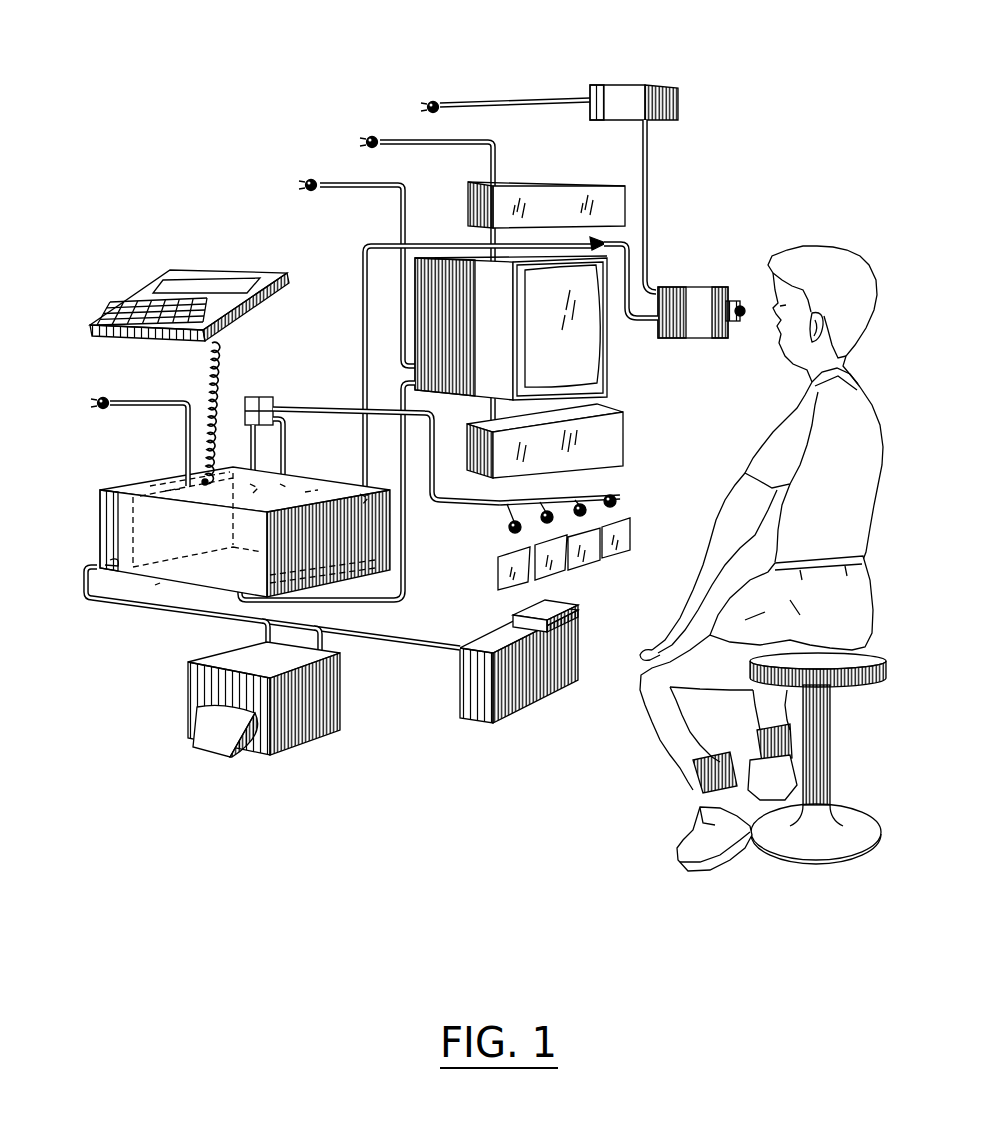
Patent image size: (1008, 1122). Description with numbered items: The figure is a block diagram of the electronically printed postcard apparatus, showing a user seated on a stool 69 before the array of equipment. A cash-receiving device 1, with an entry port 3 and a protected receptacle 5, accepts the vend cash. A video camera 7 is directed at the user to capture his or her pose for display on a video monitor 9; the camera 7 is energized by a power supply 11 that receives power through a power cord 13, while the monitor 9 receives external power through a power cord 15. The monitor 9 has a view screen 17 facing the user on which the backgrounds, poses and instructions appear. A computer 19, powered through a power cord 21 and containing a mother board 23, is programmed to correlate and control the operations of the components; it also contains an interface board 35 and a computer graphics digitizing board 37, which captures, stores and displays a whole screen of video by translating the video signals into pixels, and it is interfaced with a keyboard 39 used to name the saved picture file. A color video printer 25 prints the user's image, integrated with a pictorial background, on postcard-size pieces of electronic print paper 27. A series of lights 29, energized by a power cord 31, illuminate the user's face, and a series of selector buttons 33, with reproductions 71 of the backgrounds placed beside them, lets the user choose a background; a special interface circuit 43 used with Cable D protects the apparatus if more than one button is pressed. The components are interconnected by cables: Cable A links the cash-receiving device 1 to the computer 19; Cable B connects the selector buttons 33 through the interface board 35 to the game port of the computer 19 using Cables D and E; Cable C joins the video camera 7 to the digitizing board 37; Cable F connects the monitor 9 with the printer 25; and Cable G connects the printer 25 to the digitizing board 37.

The cash-receiving device 1 is at (539, 695).
The entry port 3 is at (578, 620).
The protected receptacle 5 is at (472, 705).
The video camera 7 is at (690, 287).
The video monitor 9 is at (554, 333).
The power supply 11 is at (622, 87).
The power cord 13 is at (497, 100).
The power cord 15 is at (333, 182).
The view screen 17 is at (582, 362).
The computer 19 is at (207, 530).
The power cord 21 is at (130, 402).
The mother board 23 is at (118, 558).
The color video printer 25 is at (225, 728).
The electronic print paper 27 is at (187, 737).
The lights 29 is at (553, 192).
The power cord 31 is at (397, 140).
The selector buttons 33 is at (612, 496).
The interface board 35 is at (165, 490).
The computer graphics digitizing board 37 is at (310, 490).
The keyboard 39 is at (178, 360).
The special interface circuit 43 is at (155, 585).
The stool 69 is at (873, 688).
The reproductions 71 is at (587, 563).
The Cable A is at (400, 640).
The Cable B is at (250, 440).
The Cable C is at (362, 337).
The Cable D is at (458, 506).
The Cable E is at (295, 418).
The Cable F is at (405, 580).
The Cable G is at (205, 615).